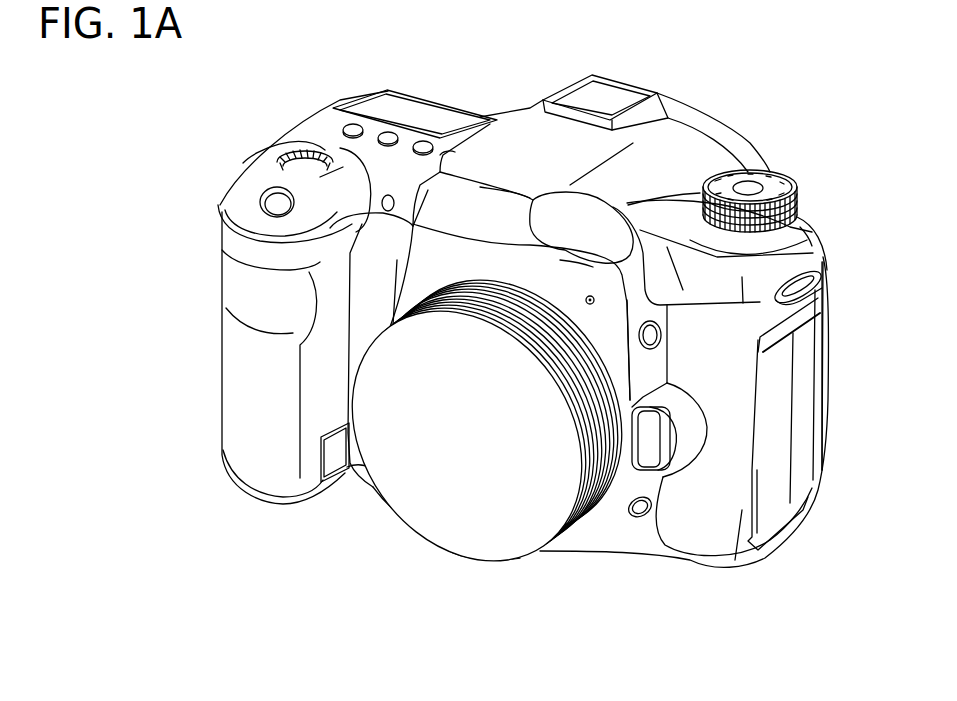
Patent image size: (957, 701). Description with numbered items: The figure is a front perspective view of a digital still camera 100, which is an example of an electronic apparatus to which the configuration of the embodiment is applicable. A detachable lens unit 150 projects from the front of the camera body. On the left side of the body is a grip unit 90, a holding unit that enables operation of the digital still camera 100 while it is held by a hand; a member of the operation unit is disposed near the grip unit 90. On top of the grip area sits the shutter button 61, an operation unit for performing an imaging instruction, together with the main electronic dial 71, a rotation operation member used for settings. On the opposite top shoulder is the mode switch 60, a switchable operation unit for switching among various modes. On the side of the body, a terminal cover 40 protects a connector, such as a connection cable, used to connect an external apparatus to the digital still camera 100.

The digital still camera 100 is at (523, 321).
The terminal cover 40 is at (772, 423).
The mode switch 60 is at (775, 190).
The shutter button 61 is at (266, 198).
The main electronic dial 71 is at (283, 144).
The grip unit 90 is at (236, 378).
The lens unit 150 is at (557, 537).